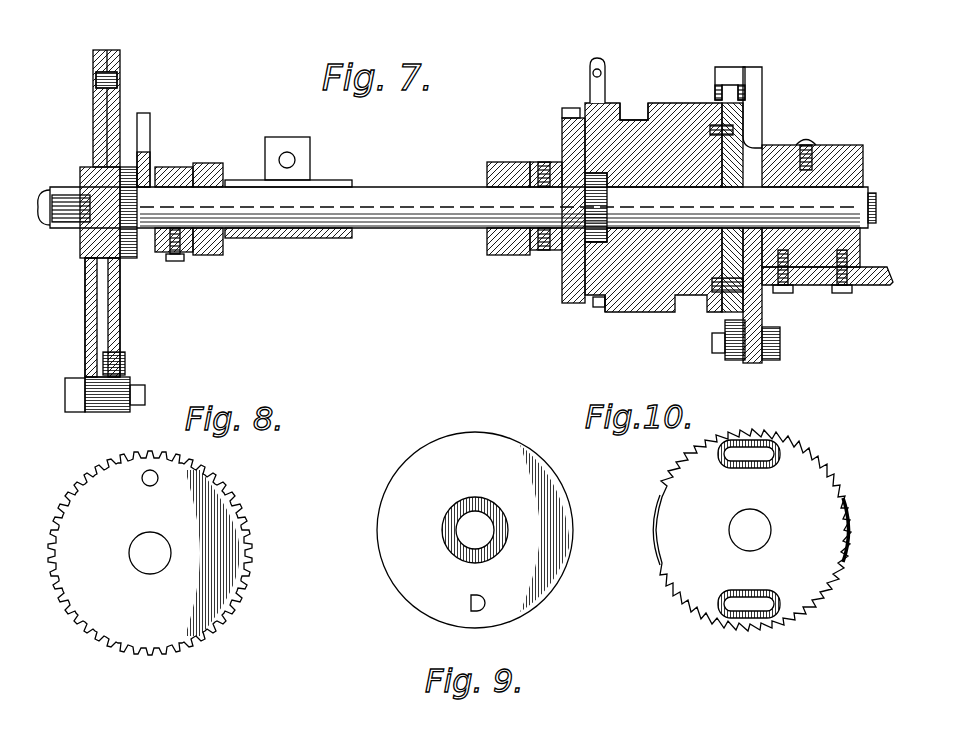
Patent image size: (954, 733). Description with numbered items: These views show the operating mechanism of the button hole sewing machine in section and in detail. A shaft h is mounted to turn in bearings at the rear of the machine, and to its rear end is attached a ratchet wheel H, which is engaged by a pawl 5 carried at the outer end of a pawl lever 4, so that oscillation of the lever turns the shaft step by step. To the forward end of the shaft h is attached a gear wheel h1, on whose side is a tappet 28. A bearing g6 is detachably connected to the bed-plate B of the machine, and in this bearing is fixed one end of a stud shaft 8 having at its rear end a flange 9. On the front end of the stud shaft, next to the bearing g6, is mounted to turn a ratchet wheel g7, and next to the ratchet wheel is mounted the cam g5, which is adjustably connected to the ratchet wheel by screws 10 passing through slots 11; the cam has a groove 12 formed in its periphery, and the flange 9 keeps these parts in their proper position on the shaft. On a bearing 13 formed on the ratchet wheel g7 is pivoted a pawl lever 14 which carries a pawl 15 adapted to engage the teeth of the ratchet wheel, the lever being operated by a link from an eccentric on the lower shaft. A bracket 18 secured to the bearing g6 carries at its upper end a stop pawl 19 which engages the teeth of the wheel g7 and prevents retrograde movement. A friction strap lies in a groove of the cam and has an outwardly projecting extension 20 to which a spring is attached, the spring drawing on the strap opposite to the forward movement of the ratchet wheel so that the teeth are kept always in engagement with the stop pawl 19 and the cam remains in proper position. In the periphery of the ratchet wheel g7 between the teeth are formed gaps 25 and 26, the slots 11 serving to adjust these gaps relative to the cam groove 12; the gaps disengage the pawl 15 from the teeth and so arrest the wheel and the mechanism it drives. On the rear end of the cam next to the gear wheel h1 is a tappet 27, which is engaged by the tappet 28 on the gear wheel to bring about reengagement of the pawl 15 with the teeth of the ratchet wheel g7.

In FIG. 7, the shaft h is at (453, 207).
In FIG. 7, the ratchet wheel H is at (122, 300).
In FIG. 7, the pawl lever 4 is at (85, 345).
In FIG. 7, the pawl 5 is at (128, 372).
In FIG. 7, the gear wheel h1 is at (568, 290).
In FIG. 8, the gear wheel h1 is at (222, 525).
In FIG. 7, the tappet 28 is at (578, 128).
In FIG. 8, the tappet 28 is at (145, 470).
In FIG. 7, the flange 9 is at (607, 193).
In FIG. 7, the cam g5 is at (653, 207).
In FIG. 9, the cam g5 is at (475, 530).
In FIG. 7, the groove 12 is at (637, 118).
In FIG. 7, the extension 20 is at (590, 86).
In FIG. 7, the screws 10 is at (714, 125).
In FIG. 7, the ratchet wheel g7 is at (745, 72).
In FIG. 10, the ratchet wheel g7 is at (753, 530).
In FIG. 7, the stop pawl 19 is at (735, 85).
In FIG. 7, the bracket 18 is at (758, 76).
In FIG. 7, the bearing 13 is at (815, 141).
In FIG. 7, the bearing g6 is at (864, 167).
In FIG. 7, the stud shaft 8 is at (833, 208).
In FIG. 7, the tappet 27 is at (599, 307).
In FIG. 9, the tappet 27 is at (467, 605).
In FIG. 7, the pawl lever 14 is at (765, 313).
In FIG. 7, the pawl 15 is at (735, 348).
In FIG. 7, the bed-plate B is at (903, 270).
In FIG. 10, the slots 11 is at (752, 456).
In FIG. 10, the gap 26 is at (652, 530).
In FIG. 10, the gap 25 is at (850, 530).